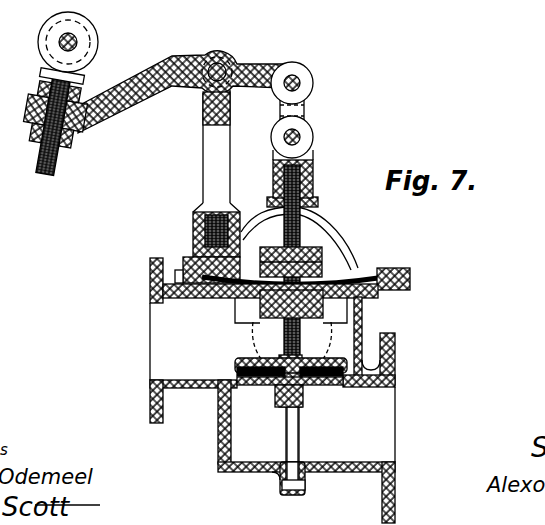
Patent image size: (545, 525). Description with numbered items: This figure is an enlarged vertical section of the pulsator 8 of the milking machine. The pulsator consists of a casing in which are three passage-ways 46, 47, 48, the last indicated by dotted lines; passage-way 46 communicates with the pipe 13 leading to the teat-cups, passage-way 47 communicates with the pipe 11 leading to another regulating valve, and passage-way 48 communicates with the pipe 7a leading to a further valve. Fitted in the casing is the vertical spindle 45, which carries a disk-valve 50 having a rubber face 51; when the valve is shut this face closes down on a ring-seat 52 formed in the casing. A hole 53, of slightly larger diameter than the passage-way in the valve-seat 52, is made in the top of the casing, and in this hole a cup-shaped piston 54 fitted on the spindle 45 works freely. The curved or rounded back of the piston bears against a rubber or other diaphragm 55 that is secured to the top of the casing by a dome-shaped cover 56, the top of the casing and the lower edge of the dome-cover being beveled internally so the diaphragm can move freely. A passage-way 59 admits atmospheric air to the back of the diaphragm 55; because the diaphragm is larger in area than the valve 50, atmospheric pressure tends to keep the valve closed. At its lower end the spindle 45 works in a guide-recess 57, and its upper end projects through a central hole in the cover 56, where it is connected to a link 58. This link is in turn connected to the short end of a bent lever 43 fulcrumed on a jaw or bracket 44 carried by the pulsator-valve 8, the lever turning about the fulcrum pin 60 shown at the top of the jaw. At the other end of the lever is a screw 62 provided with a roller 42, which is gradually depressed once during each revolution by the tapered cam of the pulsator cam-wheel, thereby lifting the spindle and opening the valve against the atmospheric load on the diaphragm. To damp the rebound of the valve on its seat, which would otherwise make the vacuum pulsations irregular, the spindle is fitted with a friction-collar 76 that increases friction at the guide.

The roller 42 is at (78, 48).
The bent lever 43 is at (118, 88).
The screw 62 is at (56, 159).
The fulcrum pin 60 is at (226, 63).
The link 58 is at (306, 106).
The jaw or bracket 44 is at (213, 155).
The passage-way 59 is at (202, 245).
The dome-shaped cover 56 is at (316, 229).
The spindle 45 is at (313, 168).
The pulsator 8 is at (348, 233).
The diaphragm 55 is at (343, 275).
The hole 53 is at (407, 270).
The cup-shaped piston 54 is at (255, 308).
The pipe 7a is at (330, 337).
The passage-way 48 is at (322, 346).
The passage-way 46 is at (272, 380).
The passage-way 47 is at (306, 455).
The disk-valve 50 is at (258, 365).
The rubber face 51 is at (260, 380).
The ring-seat 52 is at (323, 390).
The guide-recess 57 is at (295, 472).
The friction-collar 76 is at (303, 480).
The pipe 13 is at (140, 343).
The pipe 11 is at (437, 428).